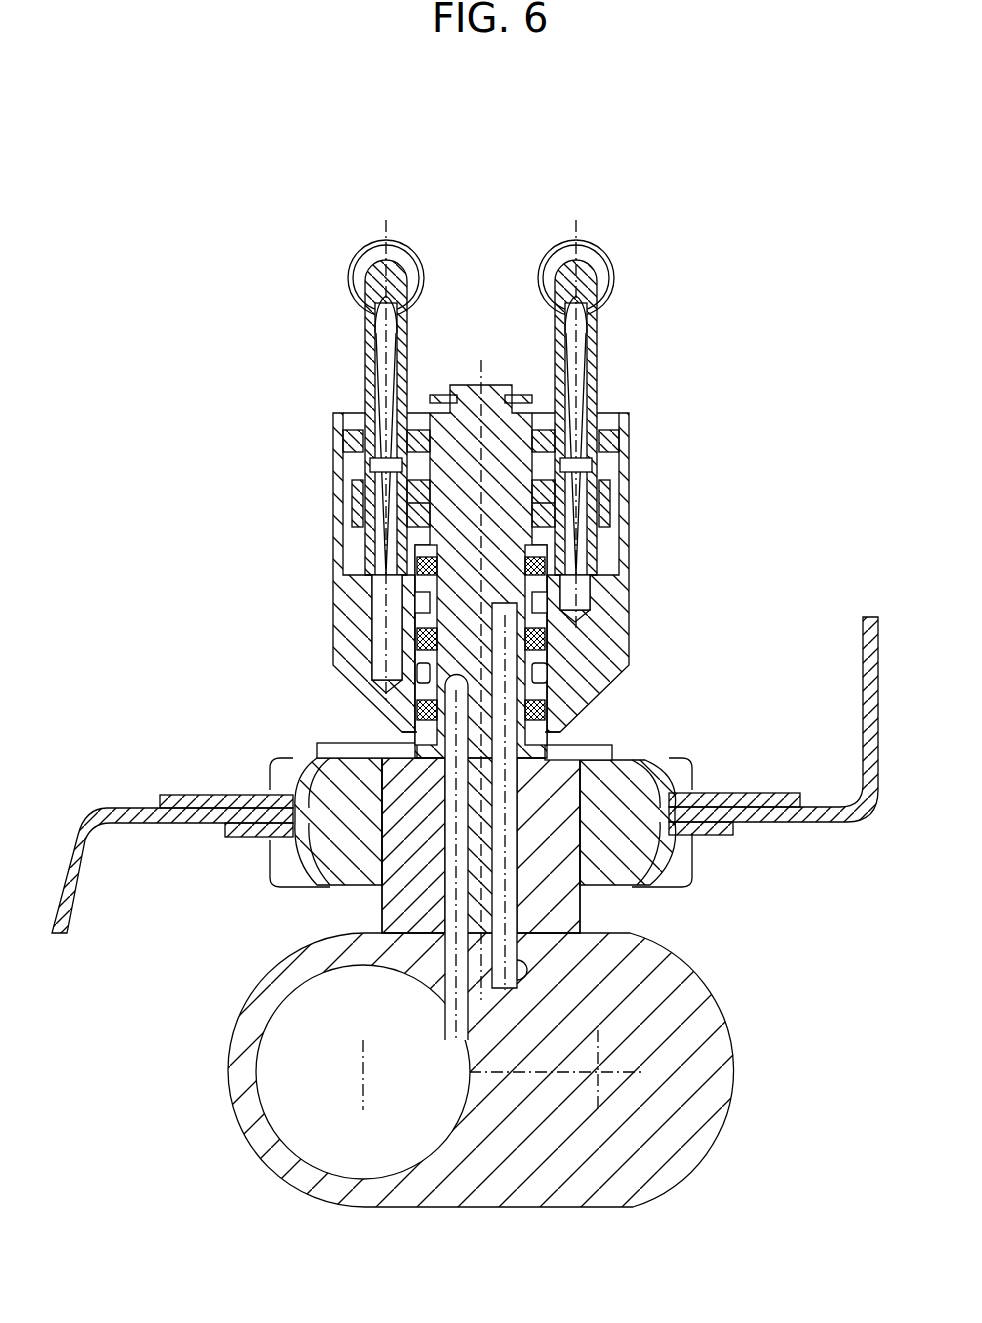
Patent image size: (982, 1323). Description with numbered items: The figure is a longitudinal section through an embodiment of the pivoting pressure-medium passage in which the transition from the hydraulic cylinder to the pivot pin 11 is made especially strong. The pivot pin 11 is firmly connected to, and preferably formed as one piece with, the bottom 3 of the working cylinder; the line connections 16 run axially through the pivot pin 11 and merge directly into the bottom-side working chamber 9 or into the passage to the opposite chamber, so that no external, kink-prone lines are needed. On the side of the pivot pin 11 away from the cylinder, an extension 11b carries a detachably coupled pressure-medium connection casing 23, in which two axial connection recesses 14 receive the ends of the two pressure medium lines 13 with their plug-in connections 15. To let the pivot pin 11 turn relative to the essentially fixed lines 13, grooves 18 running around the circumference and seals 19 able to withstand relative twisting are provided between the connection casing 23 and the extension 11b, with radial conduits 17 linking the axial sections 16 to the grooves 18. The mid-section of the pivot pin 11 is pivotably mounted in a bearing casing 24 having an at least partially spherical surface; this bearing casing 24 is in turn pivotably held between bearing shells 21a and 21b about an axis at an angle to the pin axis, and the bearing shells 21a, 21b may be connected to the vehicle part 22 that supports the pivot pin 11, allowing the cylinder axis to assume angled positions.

The bottom 3 is at (627, 1022).
The bottom-side working chamber 9 is at (310, 1053).
The pivot pin 11 is at (528, 793).
The extension 11b is at (500, 512).
The pressure medium lines 13 is at (557, 327).
The connection recesses 14 is at (363, 484).
The plug-in connections 15 is at (363, 463).
The line connections 16 is at (507, 942).
The radial conduit 17 is at (430, 672).
The groove 18 is at (420, 600).
The seals 19 is at (423, 638).
The bearing shell 21a is at (707, 830).
The bearing shell 21b is at (723, 800).
The vehicle part 22 is at (130, 815).
The pressure-medium connection casing 23 is at (608, 615).
The bearing casing 24 is at (350, 788).